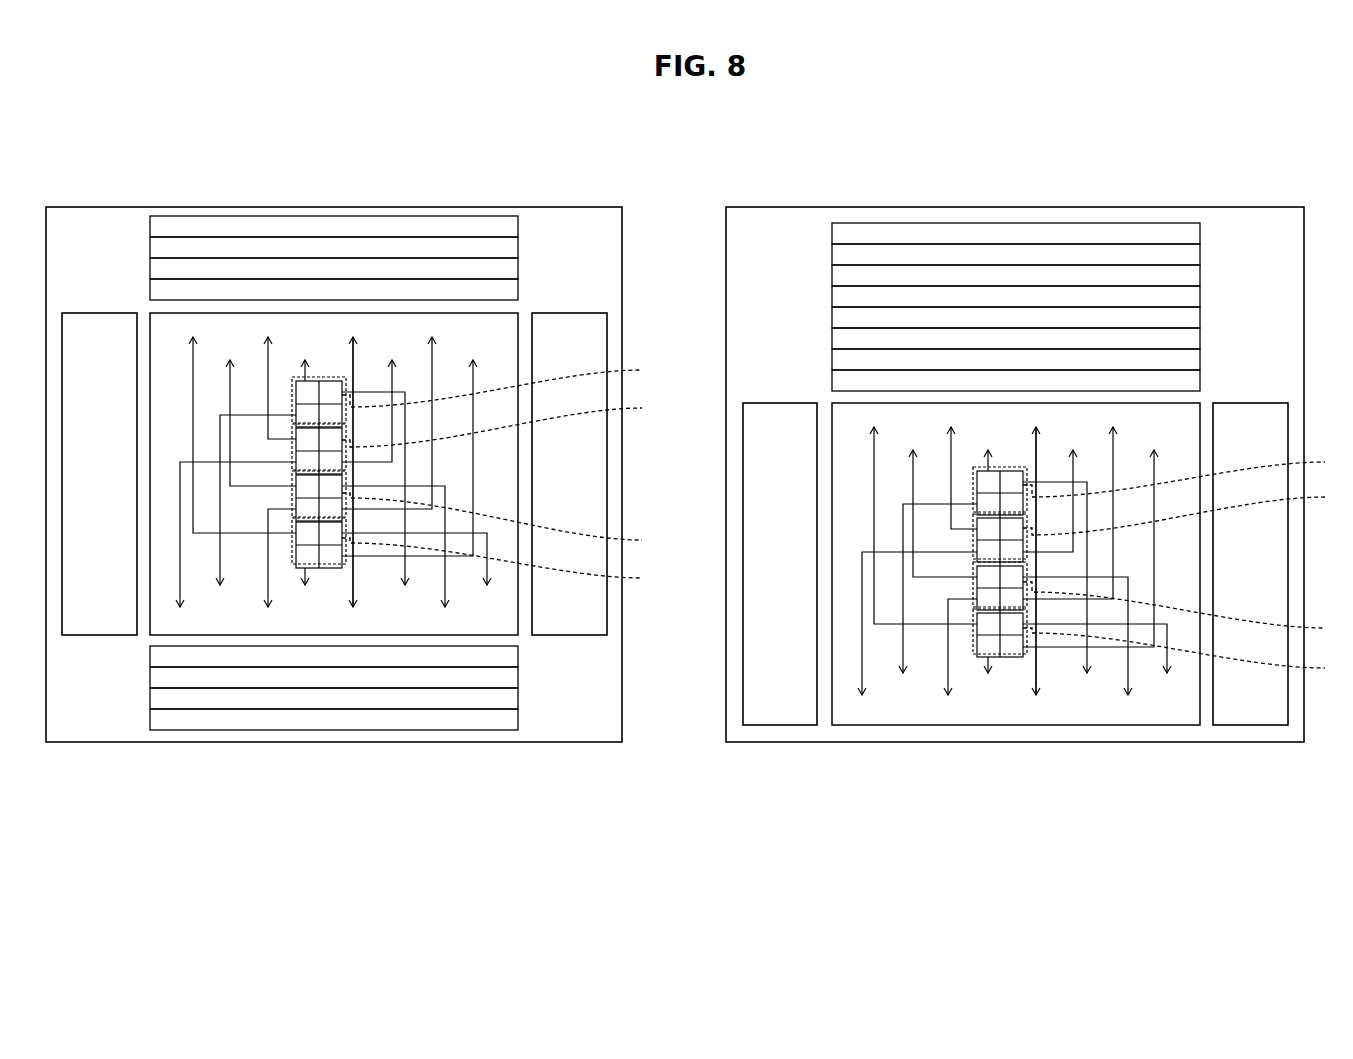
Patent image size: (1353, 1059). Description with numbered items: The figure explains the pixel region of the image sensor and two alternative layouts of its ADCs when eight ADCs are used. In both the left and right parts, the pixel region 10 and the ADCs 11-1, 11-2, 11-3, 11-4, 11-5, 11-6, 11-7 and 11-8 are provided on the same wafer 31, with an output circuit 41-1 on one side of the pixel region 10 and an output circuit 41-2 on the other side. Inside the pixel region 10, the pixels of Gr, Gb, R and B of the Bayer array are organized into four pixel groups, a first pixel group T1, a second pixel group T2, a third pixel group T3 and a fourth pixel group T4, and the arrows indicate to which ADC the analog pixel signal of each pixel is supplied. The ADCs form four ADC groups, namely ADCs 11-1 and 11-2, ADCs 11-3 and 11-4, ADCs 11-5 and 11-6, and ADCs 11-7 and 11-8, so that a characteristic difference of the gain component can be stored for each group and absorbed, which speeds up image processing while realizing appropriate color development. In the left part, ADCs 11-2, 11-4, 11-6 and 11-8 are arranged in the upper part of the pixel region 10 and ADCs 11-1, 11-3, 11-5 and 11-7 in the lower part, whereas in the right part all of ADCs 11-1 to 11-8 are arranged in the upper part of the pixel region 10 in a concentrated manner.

The pixel region 10 is at (150, 555).
The wafer 31 is at (201, 744).
The output circuit 41-1 is at (97, 312).
The output circuit 41-2 is at (577, 312).
The ADC 11-1 is at (485, 660).
The ADC 11-2 is at (478, 294).
The ADC 11-3 is at (448, 682).
The ADC 11-4 is at (445, 273).
The ADC 11-5 is at (410, 703).
The ADC 11-6 is at (407, 252).
The ADC 11-7 is at (375, 723).
The ADC 11-8 is at (371, 232).
The first pixel group T1 is at (847, 428).
The second pixel group T2 is at (847, 466).
The third pixel group T3 is at (847, 567).
The fourth pixel group T4 is at (847, 609).